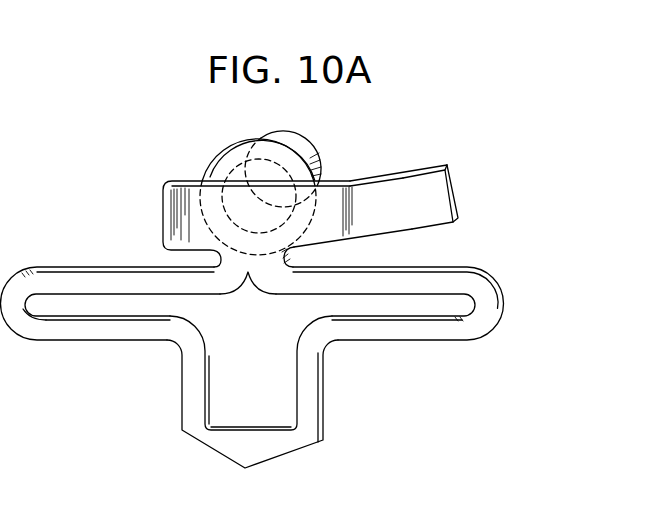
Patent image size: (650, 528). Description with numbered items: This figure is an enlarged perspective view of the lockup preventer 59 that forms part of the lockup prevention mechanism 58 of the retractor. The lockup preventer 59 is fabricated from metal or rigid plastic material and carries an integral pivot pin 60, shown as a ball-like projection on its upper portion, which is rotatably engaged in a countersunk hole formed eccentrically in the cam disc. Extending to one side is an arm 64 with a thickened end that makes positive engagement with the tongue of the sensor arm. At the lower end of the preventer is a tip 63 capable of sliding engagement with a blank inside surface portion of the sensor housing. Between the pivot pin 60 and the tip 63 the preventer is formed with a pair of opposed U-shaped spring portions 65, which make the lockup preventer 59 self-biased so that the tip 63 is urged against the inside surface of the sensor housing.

The lockup prevention mechanism 58 is at (363, 167).
The lockup preventer 59 is at (403, 167).
The pivot pin 60 is at (293, 133).
The tip 63 is at (273, 458).
The arm 64 is at (440, 208).
The U-shaped spring portions 65 is at (39, 341).